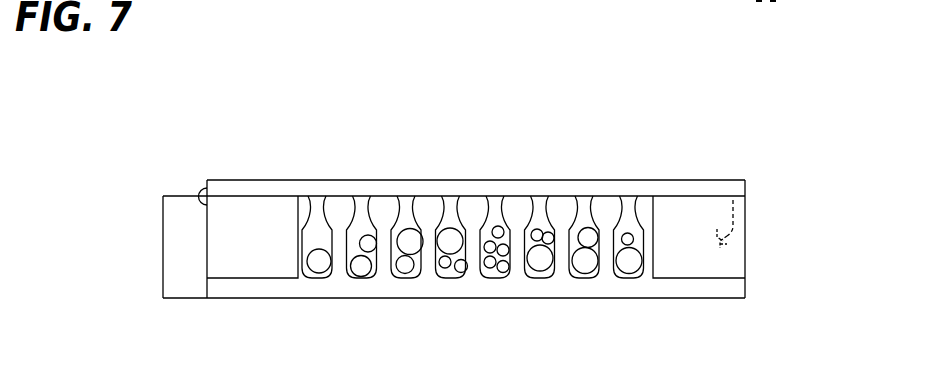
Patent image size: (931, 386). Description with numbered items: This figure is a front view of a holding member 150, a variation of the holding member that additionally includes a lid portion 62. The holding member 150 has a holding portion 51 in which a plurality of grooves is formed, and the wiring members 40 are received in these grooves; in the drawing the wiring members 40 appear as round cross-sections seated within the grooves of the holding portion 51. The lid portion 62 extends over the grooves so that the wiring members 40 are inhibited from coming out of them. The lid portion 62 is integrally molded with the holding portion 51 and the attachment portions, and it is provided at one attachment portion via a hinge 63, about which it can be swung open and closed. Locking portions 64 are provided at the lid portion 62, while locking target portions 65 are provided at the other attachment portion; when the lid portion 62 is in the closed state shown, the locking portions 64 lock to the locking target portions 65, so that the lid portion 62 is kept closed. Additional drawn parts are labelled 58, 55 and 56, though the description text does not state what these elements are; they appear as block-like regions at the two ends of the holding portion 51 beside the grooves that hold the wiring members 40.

The holding member 150 is at (223, 99).
The holding portion 51 is at (415, 307).
The hinge 63 is at (392, 183).
The end block 58 is at (182, 287).
The left retaining block 55 is at (251, 270).
The right retaining block 56 is at (687, 268).
The lid portion 62 is at (201, 190).
The locking portions 64 is at (740, 216).
The locking target portions 65 is at (740, 252).
The wiring members 40 is at (362, 270).